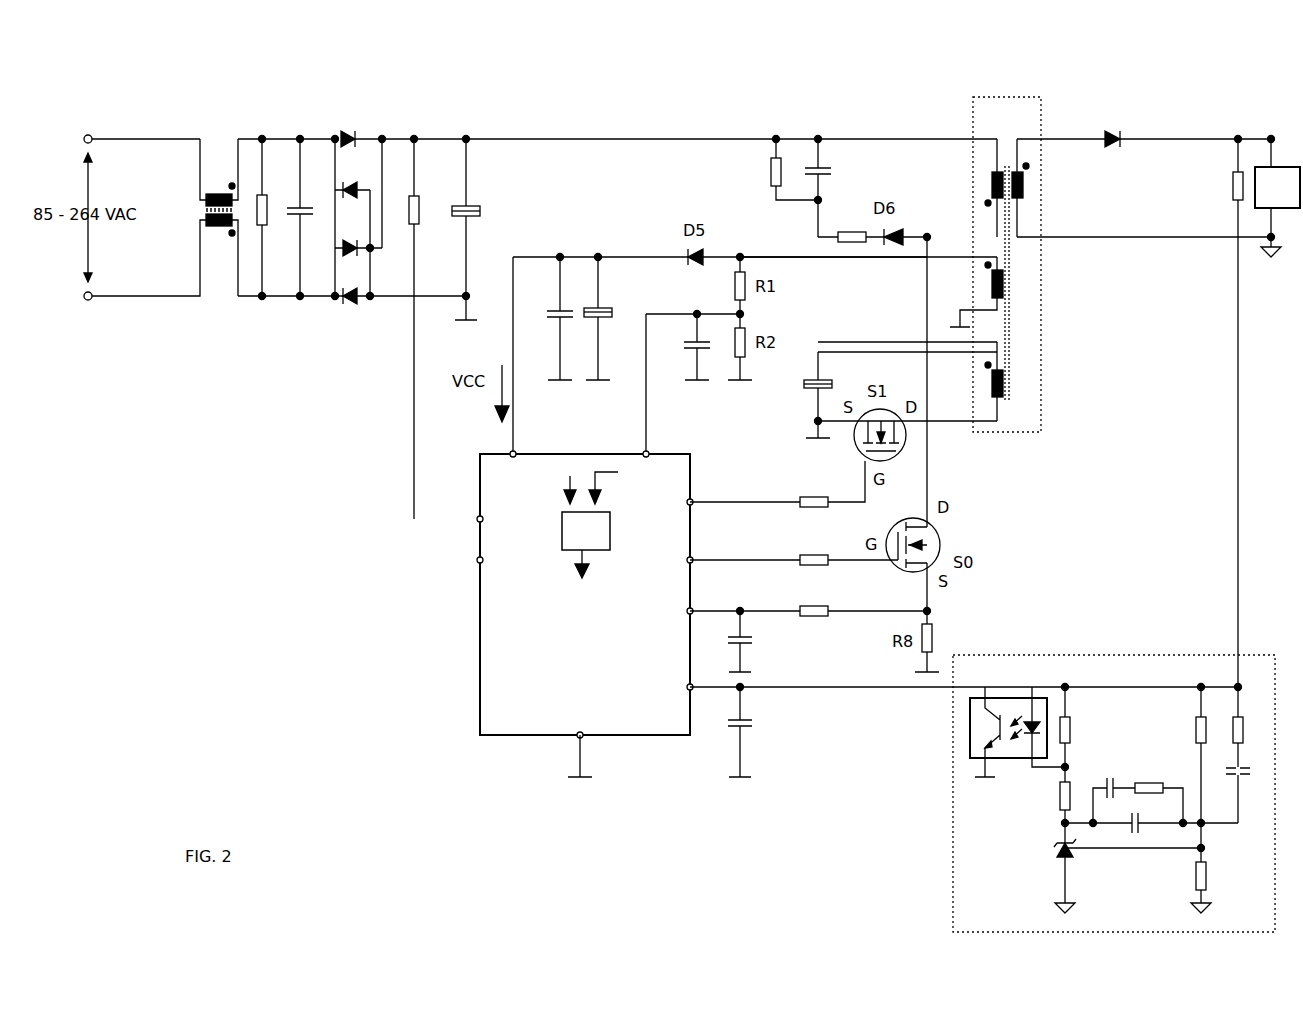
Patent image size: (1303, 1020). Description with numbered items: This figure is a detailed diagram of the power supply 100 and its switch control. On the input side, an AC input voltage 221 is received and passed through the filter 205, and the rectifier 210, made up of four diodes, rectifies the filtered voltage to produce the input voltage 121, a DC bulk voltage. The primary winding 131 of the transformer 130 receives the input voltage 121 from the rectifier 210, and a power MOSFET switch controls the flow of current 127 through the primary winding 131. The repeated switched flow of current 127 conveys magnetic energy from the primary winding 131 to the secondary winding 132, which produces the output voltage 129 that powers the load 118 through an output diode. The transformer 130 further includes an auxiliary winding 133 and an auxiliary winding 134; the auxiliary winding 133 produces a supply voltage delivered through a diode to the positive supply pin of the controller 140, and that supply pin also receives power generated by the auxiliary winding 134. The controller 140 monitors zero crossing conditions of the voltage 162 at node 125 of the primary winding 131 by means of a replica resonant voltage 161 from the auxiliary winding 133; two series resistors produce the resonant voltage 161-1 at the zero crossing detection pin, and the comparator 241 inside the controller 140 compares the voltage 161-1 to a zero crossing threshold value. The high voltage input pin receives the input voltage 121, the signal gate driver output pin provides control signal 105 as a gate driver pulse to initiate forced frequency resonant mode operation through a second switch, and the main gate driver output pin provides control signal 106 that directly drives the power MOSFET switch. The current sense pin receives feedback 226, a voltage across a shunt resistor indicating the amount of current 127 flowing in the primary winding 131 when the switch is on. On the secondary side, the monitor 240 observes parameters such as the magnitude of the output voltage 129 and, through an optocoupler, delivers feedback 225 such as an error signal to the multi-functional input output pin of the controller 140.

The power supply 100 is at (151, 610).
The control signal 105 is at (752, 483).
The control signal 106 is at (760, 545).
The load 118 is at (1277, 198).
The input voltage 121 is at (391, 406).
The node 125 is at (927, 500).
The current 127 is at (912, 278).
The output voltage 129 is at (1200, 126).
The transformer 130 is at (1011, 264).
The primary winding 131 is at (992, 185).
The secondary winding 132 is at (1030, 185).
The auxiliary winding 133 is at (1003, 287).
The auxiliary winding 134 is at (1003, 385).
The controller 140 is at (585, 614).
The replica resonant voltage 161 is at (850, 268).
The resonant voltage 161-1 is at (634, 392).
The voltage 162 is at (933, 476).
The filter 205 is at (221, 163).
The rectifier 210 is at (320, 318).
The AC input voltage 221 is at (168, 123).
The feedback 225 is at (840, 696).
The feedback 226 is at (860, 600).
The monitor 240 is at (1114, 793).
The comparator 241 is at (586, 531).